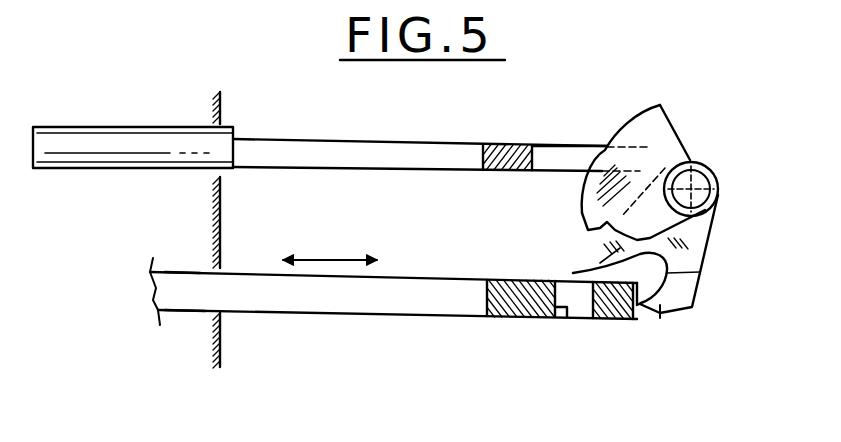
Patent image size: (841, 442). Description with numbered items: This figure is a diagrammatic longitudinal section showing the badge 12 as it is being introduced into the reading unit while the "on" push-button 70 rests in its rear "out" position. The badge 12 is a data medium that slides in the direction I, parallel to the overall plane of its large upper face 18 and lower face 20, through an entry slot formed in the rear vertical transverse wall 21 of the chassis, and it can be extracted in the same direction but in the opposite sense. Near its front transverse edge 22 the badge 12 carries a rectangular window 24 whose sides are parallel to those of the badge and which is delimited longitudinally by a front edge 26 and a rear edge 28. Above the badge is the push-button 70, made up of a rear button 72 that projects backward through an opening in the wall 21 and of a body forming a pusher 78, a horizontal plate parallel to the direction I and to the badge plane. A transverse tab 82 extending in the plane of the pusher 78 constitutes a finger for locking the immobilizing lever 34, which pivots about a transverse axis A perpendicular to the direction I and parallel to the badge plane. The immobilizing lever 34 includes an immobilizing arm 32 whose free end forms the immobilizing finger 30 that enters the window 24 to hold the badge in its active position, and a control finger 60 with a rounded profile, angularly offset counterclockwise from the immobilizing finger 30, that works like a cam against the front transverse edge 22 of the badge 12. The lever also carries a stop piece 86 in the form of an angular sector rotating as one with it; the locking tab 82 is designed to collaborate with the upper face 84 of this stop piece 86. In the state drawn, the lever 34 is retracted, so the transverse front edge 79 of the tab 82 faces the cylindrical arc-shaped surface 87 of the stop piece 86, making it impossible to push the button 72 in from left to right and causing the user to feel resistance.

The button 72 is at (115, 124).
The rear vertical transverse wall 21 is at (225, 118).
The push-button 70 is at (420, 162).
The pusher 78 is at (326, 152).
The transverse tab 82 is at (518, 143).
The transverse front edge 79 is at (533, 158).
The stop piece 86 is at (652, 142).
The cylindrical arc-shaped surface 87 is at (613, 140).
The upper face 84 is at (680, 137).
The transverse axis A is at (719, 189).
The immobilizing lever 34 is at (650, 231).
The immobilizing arm 32 is at (700, 272).
The immobilizing finger 30 is at (573, 273).
The control finger 60 is at (660, 308).
The badge 12 is at (386, 322).
The upper face 18 is at (183, 272).
The lower face 20 is at (198, 315).
The rear edge 28 is at (570, 321).
The window 24 is at (580, 322).
The front edge 26 is at (589, 322).
The front transverse edge 22 is at (643, 320).
The direction of introduction I is at (327, 232).